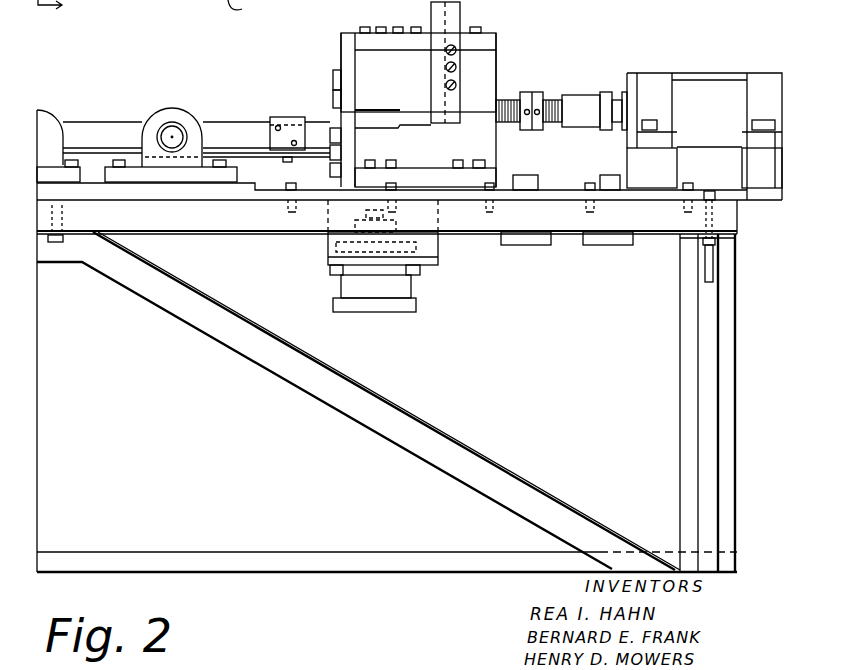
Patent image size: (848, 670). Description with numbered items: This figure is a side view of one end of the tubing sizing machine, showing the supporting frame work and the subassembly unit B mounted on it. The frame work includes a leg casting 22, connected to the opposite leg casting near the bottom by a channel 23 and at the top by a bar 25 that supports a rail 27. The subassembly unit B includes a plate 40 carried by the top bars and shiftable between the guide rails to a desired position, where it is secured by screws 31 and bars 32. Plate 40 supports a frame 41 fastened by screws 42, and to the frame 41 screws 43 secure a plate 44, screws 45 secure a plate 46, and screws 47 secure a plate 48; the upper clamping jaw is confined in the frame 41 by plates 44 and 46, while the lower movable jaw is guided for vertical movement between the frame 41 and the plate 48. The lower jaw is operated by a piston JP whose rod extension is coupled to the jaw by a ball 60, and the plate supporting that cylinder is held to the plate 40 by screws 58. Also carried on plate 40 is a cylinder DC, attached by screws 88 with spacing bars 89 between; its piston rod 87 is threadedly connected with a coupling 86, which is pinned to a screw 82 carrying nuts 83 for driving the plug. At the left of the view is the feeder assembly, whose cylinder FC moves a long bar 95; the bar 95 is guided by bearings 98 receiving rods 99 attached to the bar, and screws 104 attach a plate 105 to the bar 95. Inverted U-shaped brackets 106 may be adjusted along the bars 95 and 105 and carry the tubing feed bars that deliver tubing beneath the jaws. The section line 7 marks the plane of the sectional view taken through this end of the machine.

The section line 7— 7 is at (57, 9).
The leg casting 22 is at (680, 292).
The channel 23 is at (313, 533).
The bar 25 is at (298, 234).
The rail 27 is at (281, 197).
The plate 40 is at (566, 191).
The frame 41 is at (497, 83).
The screws 42 is at (456, 160).
The screws 43 is at (471, 28).
The plate 44 is at (498, 40).
The screws 45 is at (333, 87).
The plate 46 is at (341, 42).
The screws 47 is at (330, 172).
The plate 48 is at (352, 150).
The screws 58 is at (335, 277).
The ball 60 is at (501, 124).
The screw 82 is at (557, 99).
The nuts 83 is at (526, 93).
The coupling 86 is at (585, 96).
The piston rod 87 is at (617, 130).
The screws 88 is at (752, 125).
The spacing bars 89 is at (742, 165).
The long bar 95 is at (196, 112).
The bearings 98 is at (168, 99).
The rods 99 is at (181, 127).
The screws 104 is at (283, 159).
The plate 105 is at (196, 142).
The inverted U-shaped brackets 106 is at (287, 117).
The screws 31 is at (600, 177).
The bars 32 is at (588, 243).
The subassembly unit B is at (498, 53).
The cylinder DC is at (716, 69).
The cylinder FC is at (58, 120).
The piston JP is at (383, 256).